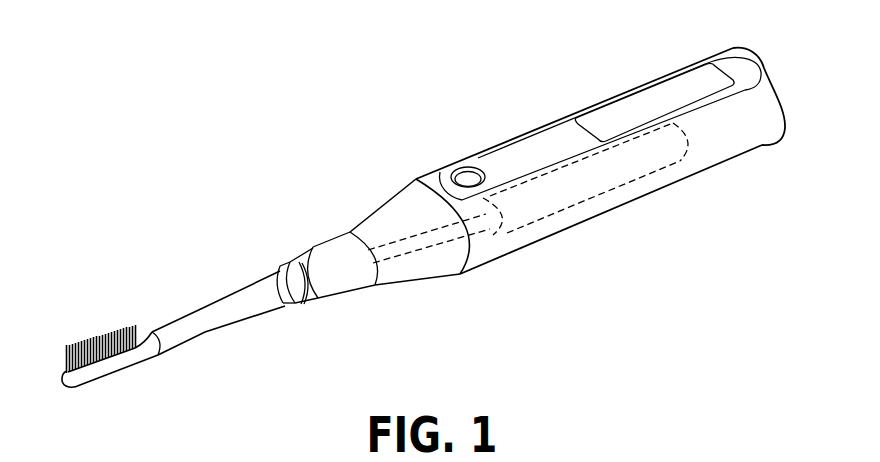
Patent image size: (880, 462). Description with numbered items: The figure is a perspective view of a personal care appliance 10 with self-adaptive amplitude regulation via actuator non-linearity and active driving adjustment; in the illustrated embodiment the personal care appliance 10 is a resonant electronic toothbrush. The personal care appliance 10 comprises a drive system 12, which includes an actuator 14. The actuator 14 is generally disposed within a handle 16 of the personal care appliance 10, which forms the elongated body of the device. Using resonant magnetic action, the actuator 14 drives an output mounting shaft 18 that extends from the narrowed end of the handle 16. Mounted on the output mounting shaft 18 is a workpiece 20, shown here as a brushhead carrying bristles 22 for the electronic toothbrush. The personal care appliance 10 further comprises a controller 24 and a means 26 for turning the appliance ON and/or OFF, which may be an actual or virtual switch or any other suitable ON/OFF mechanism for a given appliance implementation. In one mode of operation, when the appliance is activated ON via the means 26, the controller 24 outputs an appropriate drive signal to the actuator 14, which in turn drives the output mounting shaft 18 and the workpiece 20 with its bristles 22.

The personal care appliance 10 is at (187, 152).
The drive system 12 is at (505, 270).
The actuator 14 is at (601, 195).
The handle 16 is at (723, 167).
The output mounting shaft 18 is at (410, 252).
The workpiece 20 is at (213, 293).
The bristles 22 is at (108, 324).
The controller 24 is at (655, 93).
The means for turning the appliance ON and/or OFF 26 is at (470, 167).